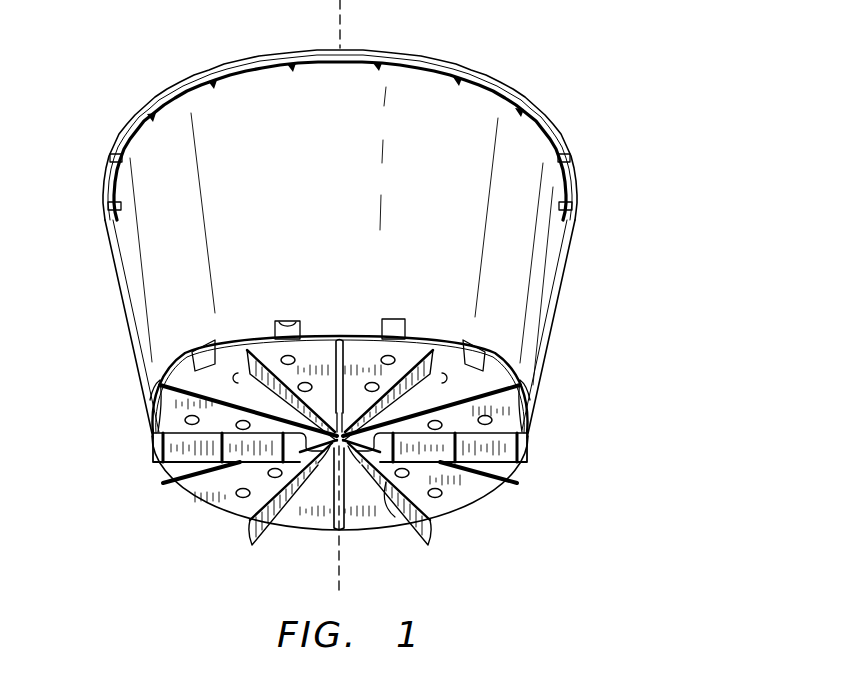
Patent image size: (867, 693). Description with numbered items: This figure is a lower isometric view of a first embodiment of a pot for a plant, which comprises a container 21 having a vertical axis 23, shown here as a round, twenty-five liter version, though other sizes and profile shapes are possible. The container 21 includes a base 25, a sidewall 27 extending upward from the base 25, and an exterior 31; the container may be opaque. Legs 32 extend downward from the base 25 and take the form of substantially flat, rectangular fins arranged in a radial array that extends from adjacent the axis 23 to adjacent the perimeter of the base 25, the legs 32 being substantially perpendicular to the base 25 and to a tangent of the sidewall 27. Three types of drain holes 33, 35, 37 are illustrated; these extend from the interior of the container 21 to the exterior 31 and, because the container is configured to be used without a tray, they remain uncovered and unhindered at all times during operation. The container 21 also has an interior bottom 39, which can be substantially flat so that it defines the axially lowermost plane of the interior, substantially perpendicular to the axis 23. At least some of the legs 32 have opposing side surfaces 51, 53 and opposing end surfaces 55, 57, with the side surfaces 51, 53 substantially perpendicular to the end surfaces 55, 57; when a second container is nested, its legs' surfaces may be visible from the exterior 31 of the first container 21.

The container 21 is at (690, 86).
The axis 23 is at (343, 31).
The base 25 is at (152, 486).
The sidewall 27 is at (150, 218).
The exterior 31 is at (118, 324).
The legs 32 is at (178, 444).
The drain hole 33 is at (291, 321).
The drain hole 35 is at (296, 360).
The drain hole 37 is at (344, 341).
The interior bottom 39 is at (392, 318).
The opposing side surface 51 is at (252, 520).
The opposing side surface 53 is at (423, 510).
The opposing end surface 55 is at (357, 473).
The opposing end surface 57 is at (434, 526).